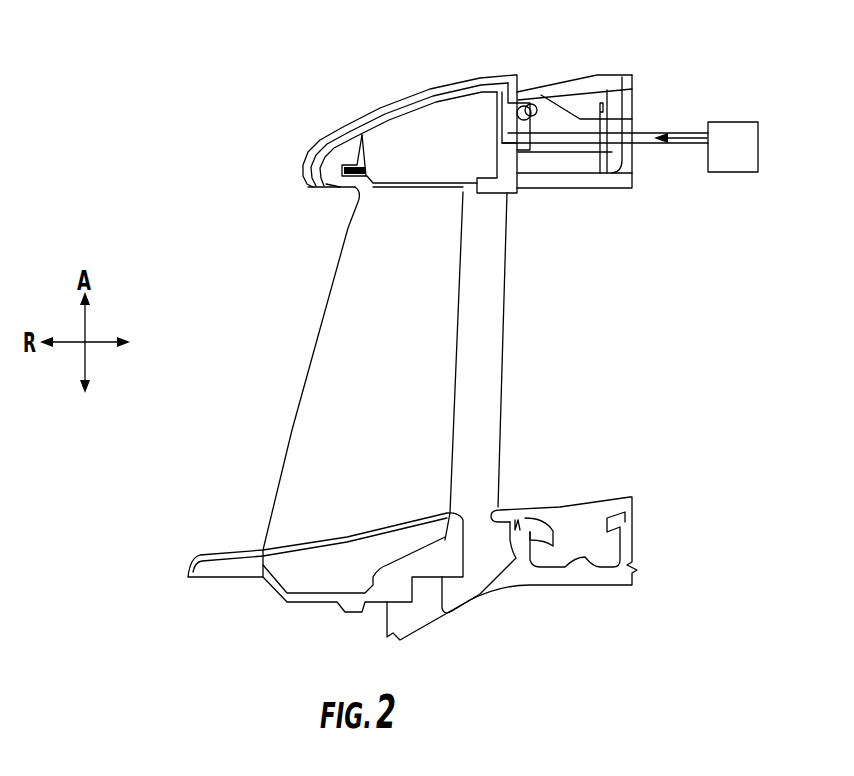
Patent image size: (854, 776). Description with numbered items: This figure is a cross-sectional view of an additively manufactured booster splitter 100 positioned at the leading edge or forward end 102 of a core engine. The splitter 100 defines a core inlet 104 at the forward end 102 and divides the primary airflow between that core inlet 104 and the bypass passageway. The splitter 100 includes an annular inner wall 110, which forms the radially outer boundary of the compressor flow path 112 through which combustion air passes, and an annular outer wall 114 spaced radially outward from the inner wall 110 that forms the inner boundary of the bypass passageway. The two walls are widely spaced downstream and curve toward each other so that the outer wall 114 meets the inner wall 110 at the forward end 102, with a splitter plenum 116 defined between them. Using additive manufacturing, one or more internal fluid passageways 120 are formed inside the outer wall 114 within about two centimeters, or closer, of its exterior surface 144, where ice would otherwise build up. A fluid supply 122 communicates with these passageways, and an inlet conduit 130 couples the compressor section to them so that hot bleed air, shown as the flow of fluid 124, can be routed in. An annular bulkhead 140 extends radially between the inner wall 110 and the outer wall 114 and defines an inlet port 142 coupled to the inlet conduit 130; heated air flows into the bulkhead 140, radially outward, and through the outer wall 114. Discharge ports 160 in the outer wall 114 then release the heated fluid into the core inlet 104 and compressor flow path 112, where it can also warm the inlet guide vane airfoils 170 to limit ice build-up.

The splitter 100 is at (340, 72).
The forward end 102 is at (303, 172).
The core inlet 104 is at (285, 360).
The inner wall 110 is at (410, 188).
The compressor flow path 112 is at (611, 322).
The outer wall 114 is at (450, 83).
The splitter plenum 116 is at (452, 163).
The internal fluid passageways 120 is at (431, 97).
The fluid supply 122 is at (749, 163).
The flow of fluid 124 is at (680, 137).
The inlet conduit 130 is at (640, 130).
The bulkhead 140 is at (522, 83).
The inlet port 142 is at (533, 132).
The exterior surface 144 is at (346, 130).
The discharge ports 160 is at (333, 197).
The airfoils 170 is at (400, 358).